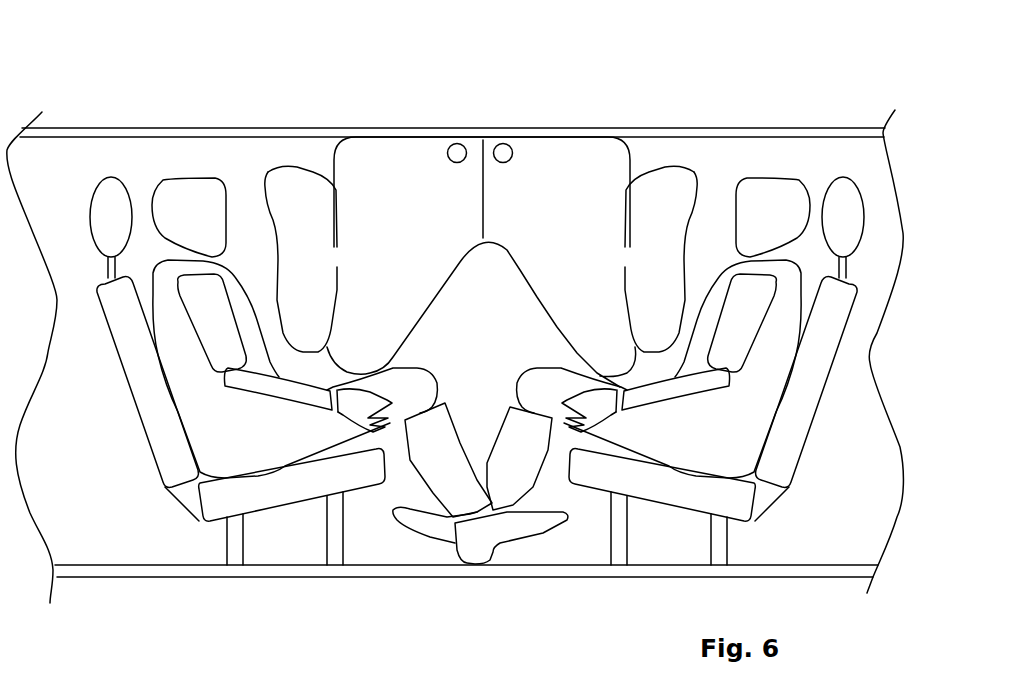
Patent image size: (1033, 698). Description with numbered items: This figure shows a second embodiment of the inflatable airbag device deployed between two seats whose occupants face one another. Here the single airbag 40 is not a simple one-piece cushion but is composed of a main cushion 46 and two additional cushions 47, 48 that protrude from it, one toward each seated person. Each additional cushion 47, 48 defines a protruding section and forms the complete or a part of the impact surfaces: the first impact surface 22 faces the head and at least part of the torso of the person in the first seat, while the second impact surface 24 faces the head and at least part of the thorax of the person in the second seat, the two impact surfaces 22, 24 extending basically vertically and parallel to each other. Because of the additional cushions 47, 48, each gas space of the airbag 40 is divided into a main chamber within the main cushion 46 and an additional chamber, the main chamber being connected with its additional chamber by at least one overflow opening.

The first impact surface 22 is at (685, 235).
The second impact surface 24 is at (275, 225).
The single airbag 40 is at (518, 267).
The main cushion 46 is at (608, 140).
The additional cushion 47 is at (662, 167).
The additional cushion 48 is at (268, 172).